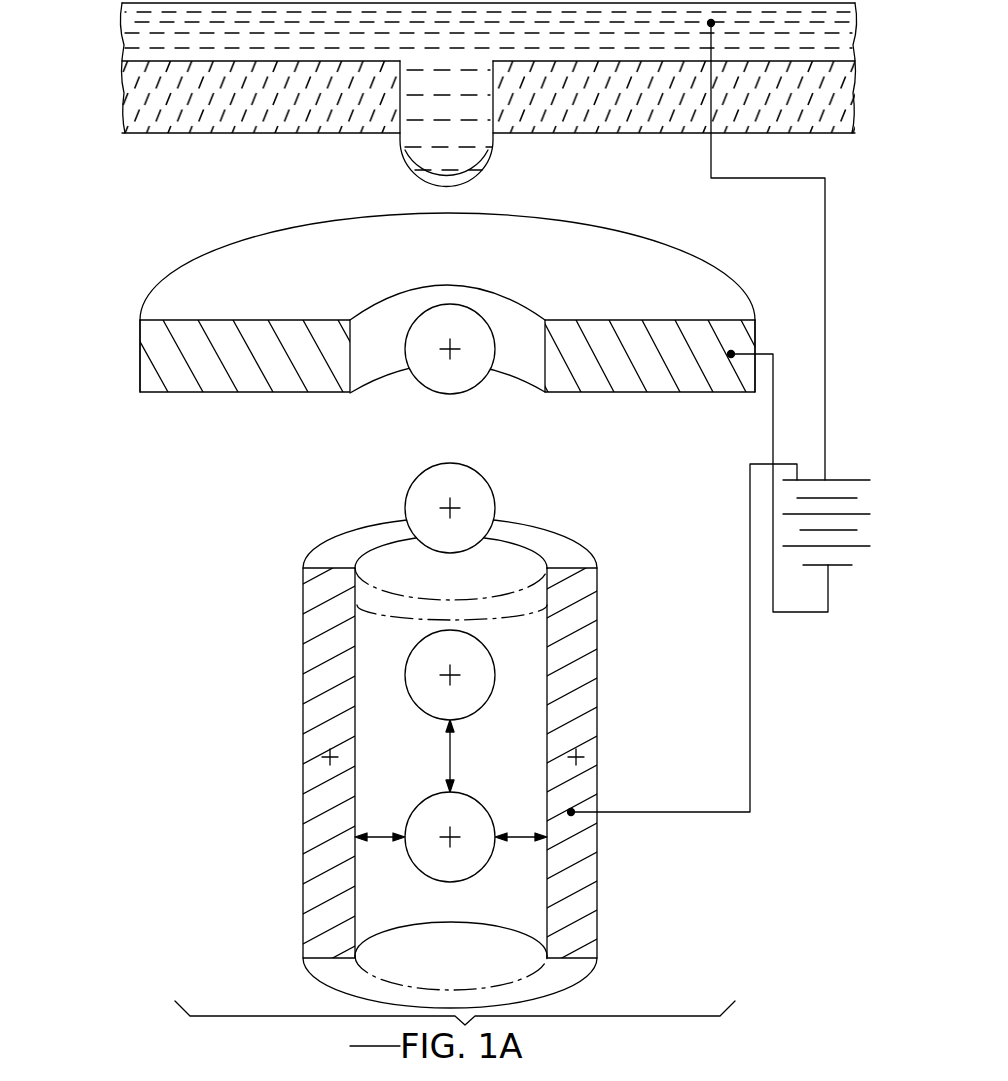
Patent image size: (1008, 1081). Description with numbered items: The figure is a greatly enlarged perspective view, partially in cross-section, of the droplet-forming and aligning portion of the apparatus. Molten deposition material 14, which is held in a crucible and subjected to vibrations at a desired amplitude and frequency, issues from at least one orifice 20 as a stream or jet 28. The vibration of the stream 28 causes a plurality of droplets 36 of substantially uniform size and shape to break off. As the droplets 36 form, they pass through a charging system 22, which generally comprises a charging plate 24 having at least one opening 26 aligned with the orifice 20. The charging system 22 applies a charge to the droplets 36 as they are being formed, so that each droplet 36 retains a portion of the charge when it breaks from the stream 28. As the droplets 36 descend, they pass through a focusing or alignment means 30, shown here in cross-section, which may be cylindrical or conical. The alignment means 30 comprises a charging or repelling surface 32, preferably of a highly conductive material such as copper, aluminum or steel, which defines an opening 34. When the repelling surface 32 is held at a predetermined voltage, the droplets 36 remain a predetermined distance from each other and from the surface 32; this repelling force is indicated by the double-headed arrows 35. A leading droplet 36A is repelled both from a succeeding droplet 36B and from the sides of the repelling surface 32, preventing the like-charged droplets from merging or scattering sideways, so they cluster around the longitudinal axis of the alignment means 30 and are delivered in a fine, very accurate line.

The deposition material 14 is at (130, 12).
The orifice 20 is at (480, 120).
The stream or jet 28 is at (405, 172).
The charging system 22 is at (142, 312).
The charging plate 24 is at (686, 382).
The opening 26 is at (521, 338).
The droplets 36 is at (482, 317).
The focusing or alignment means 30 is at (446, 735).
The charging or repelling surface 32 is at (537, 705).
The opening 34 is at (520, 557).
The double-headed arrows 35 is at (450, 752).
The leading droplet 36A is at (466, 882).
The succeeding droplet 36B is at (406, 675).